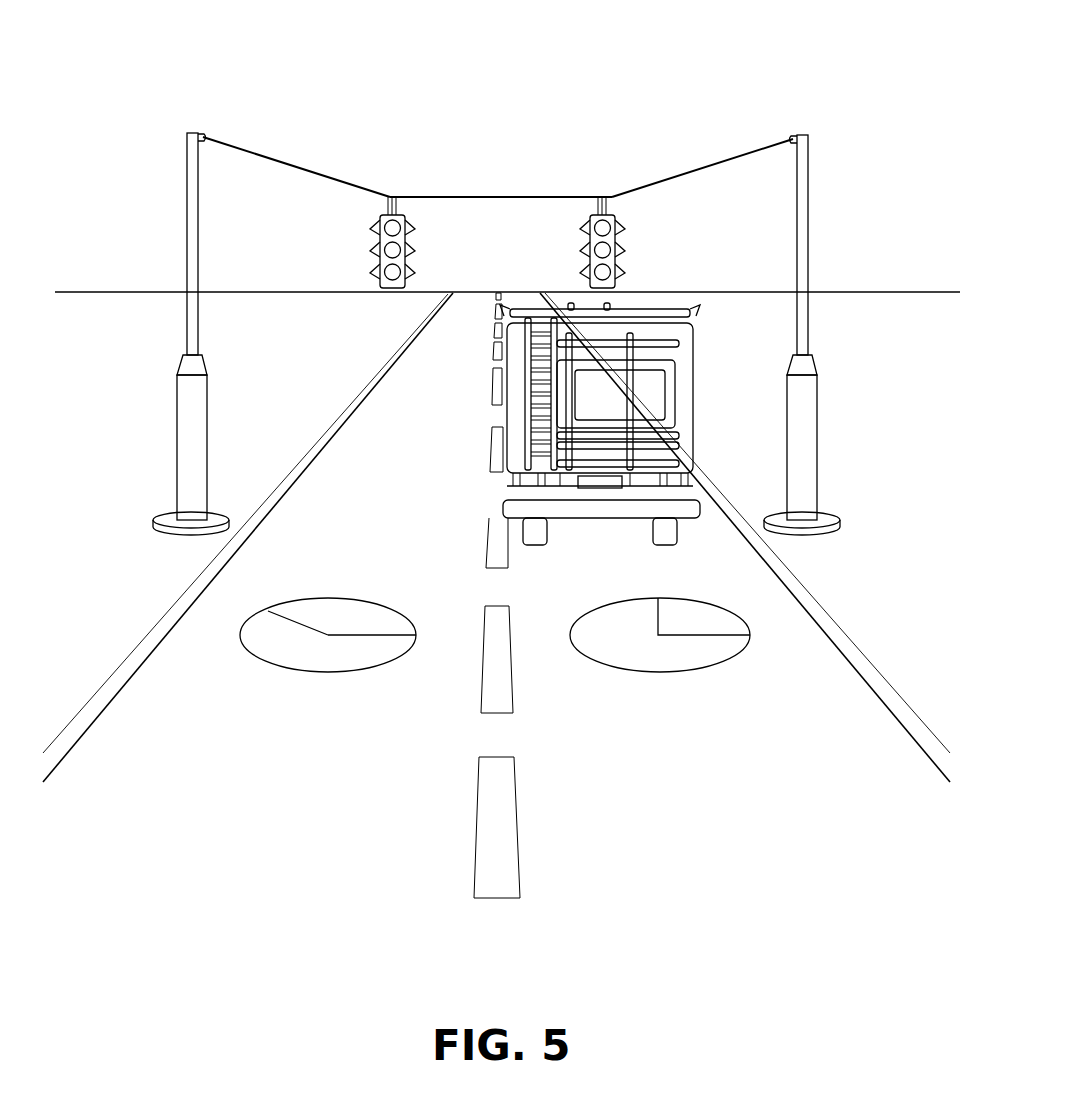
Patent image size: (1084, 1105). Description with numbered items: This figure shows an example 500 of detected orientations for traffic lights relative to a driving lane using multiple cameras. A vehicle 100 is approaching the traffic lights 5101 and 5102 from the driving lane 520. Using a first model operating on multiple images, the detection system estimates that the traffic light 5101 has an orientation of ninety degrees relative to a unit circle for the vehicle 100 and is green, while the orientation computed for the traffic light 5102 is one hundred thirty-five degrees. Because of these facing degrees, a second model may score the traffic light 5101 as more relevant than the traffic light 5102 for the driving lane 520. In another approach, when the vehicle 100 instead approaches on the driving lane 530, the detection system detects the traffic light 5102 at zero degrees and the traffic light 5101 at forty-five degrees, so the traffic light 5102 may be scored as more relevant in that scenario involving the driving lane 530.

The example of detected orientations 500 is at (767, 78).
The traffic light 5101 is at (610, 197).
The traffic light 5102 is at (398, 197).
The vehicle 100 is at (700, 493).
The driving lane 520 is at (787, 722).
The driving lane 530 is at (297, 725).